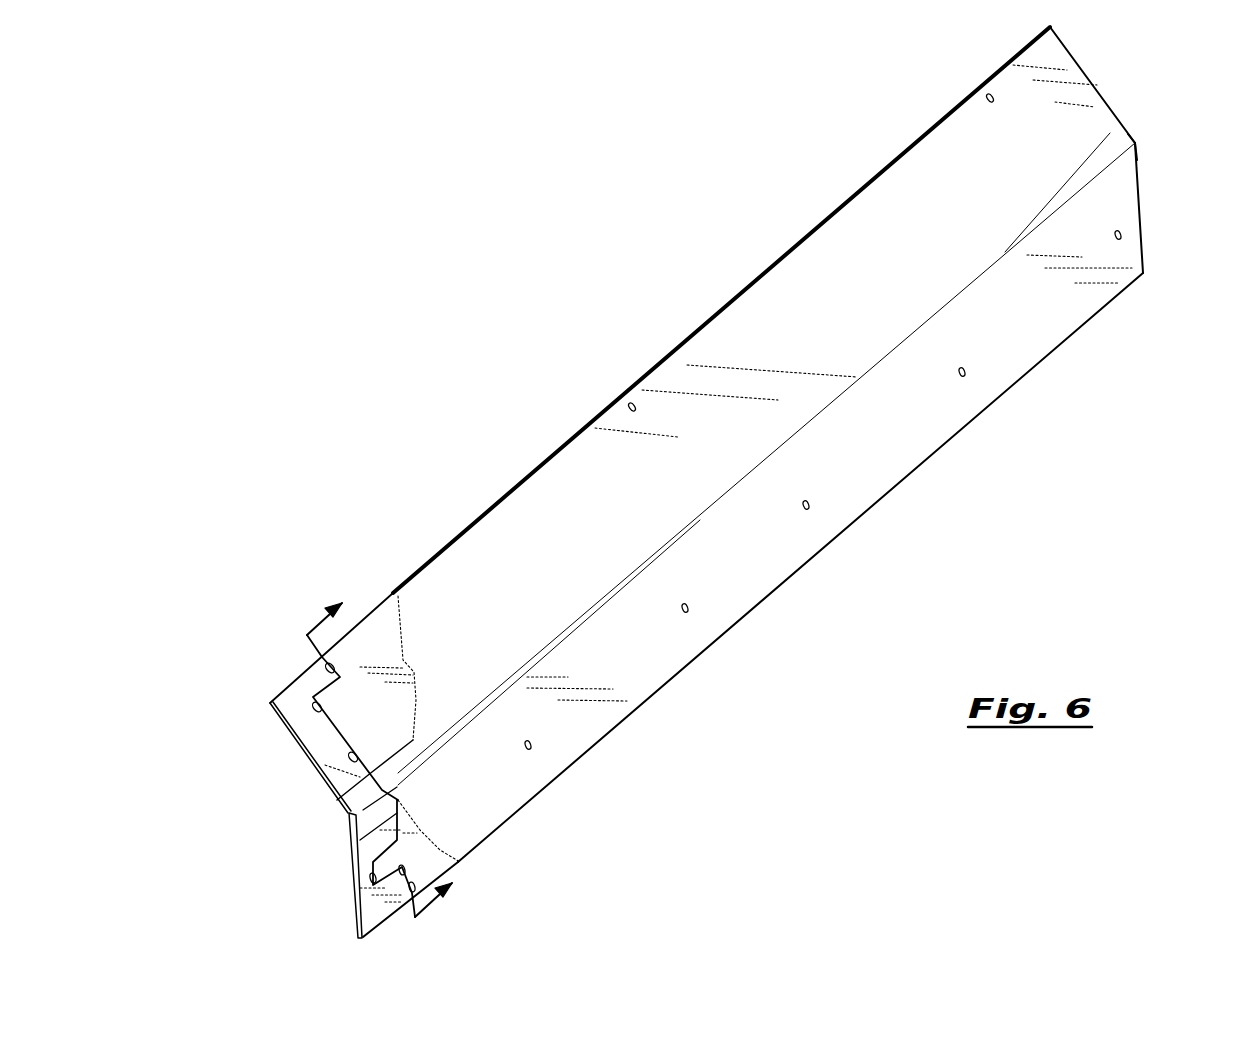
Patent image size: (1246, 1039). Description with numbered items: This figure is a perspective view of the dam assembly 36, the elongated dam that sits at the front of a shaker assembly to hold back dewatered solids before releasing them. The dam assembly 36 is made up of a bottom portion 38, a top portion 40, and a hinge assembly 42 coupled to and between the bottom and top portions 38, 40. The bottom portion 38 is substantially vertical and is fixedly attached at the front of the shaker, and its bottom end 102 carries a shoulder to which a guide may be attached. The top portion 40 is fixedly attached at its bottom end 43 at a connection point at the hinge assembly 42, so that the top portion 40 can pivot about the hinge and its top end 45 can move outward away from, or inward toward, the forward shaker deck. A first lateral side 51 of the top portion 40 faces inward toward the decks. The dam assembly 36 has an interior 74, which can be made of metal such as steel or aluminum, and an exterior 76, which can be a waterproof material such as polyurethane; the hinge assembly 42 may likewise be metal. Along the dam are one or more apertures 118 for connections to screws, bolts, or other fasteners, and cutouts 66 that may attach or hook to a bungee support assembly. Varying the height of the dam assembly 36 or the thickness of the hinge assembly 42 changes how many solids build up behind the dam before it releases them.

The dam assembly 36 is at (839, 327).
The bottom portion 38 is at (873, 468).
The top portion 40 is at (902, 218).
The hinge assembly 42 is at (350, 813).
The bottom end 43 is at (1107, 132).
The top end 45 is at (473, 522).
The first lateral side 51 is at (1055, 88).
The cutouts 66 is at (990, 95).
The interior 74 is at (363, 663).
The exterior 76 is at (437, 843).
The bottom end 102 is at (623, 723).
The apertures 118 is at (968, 373).